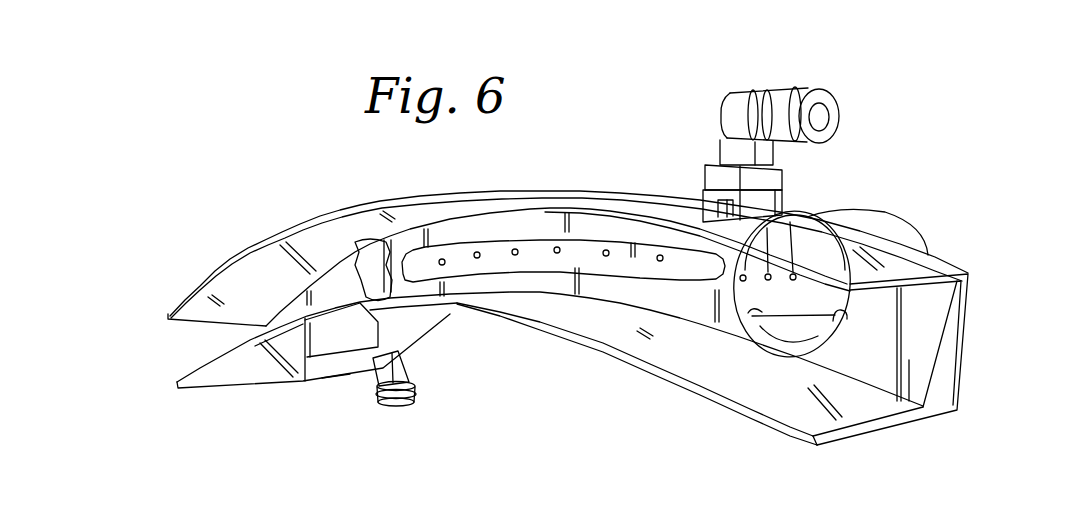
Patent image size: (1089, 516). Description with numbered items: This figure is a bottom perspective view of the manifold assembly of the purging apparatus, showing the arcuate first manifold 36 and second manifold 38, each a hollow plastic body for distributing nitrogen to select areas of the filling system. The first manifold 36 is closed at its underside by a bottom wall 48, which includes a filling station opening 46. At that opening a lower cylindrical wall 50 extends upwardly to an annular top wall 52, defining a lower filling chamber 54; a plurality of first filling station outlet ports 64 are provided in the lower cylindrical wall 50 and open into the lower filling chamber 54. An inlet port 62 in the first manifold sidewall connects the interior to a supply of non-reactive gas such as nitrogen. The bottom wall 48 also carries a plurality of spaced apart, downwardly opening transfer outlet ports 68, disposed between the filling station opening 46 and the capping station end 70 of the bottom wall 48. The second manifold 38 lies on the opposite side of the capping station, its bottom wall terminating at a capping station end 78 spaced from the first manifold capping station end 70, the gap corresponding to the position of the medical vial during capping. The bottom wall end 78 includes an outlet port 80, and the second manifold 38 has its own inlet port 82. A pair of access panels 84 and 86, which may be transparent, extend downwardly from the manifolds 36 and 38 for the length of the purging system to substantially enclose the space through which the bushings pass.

The first manifold 36 is at (918, 311).
The second manifold 38 is at (336, 423).
The filling station opening 46 is at (861, 318).
The bottom wall 48 is at (977, 344).
The lower cylindrical wall 50 is at (755, 383).
The annular top wall 52 is at (775, 403).
The lower filling chamber 54 is at (791, 311).
The inlet port 62 is at (803, 149).
The first filling station outlet ports 64 is at (745, 242).
The transfer outlet ports 68 is at (658, 261).
The capping station end 70 is at (353, 213).
The capping station end 78 is at (378, 328).
The outlet port 80 is at (362, 246).
The inlet port 82 is at (424, 400).
The access panel 84 is at (568, 231).
The access panel 86 is at (637, 380).